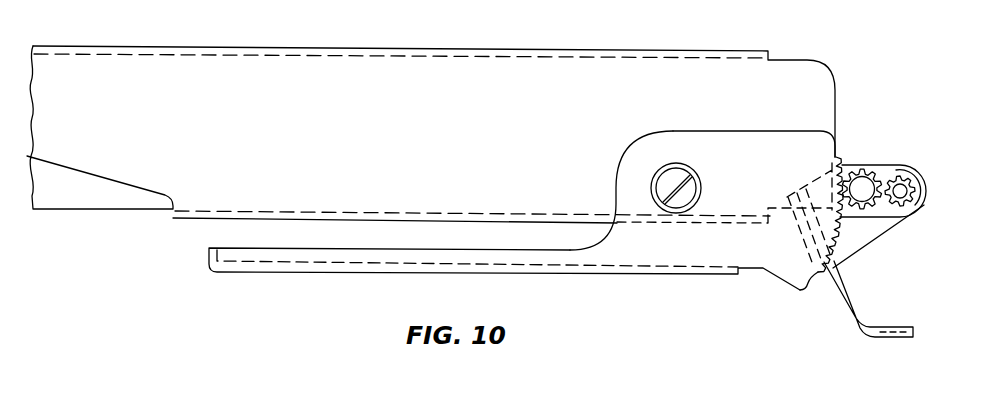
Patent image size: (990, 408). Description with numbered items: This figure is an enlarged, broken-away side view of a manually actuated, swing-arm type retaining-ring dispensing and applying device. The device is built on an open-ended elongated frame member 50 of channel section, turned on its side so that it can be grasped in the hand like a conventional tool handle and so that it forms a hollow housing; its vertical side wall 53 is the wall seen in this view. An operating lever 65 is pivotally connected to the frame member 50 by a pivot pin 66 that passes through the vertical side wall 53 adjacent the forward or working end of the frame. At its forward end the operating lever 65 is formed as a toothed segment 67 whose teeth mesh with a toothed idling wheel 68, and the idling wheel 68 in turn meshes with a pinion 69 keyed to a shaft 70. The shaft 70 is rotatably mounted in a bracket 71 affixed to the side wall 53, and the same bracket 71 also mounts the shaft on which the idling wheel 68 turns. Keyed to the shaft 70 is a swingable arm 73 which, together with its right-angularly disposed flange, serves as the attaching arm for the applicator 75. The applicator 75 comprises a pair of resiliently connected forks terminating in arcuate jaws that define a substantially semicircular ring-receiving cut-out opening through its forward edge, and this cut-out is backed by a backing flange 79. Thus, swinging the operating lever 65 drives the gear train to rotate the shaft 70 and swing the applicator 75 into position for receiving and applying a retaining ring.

The frame member 50 is at (443, 74).
The vertical side wall 53 is at (329, 137).
The operating lever 65 is at (310, 256).
The pivot pin 66 is at (685, 198).
The toothed segment 67 is at (822, 287).
The toothed idling wheel 68 is at (851, 166).
The pinion 69 is at (903, 178).
The shaft 70 is at (913, 181).
The bracket 71 is at (887, 211).
The swingable arm 73 is at (862, 233).
The applicator 75 is at (858, 306).
The backing flange 79 is at (908, 338).